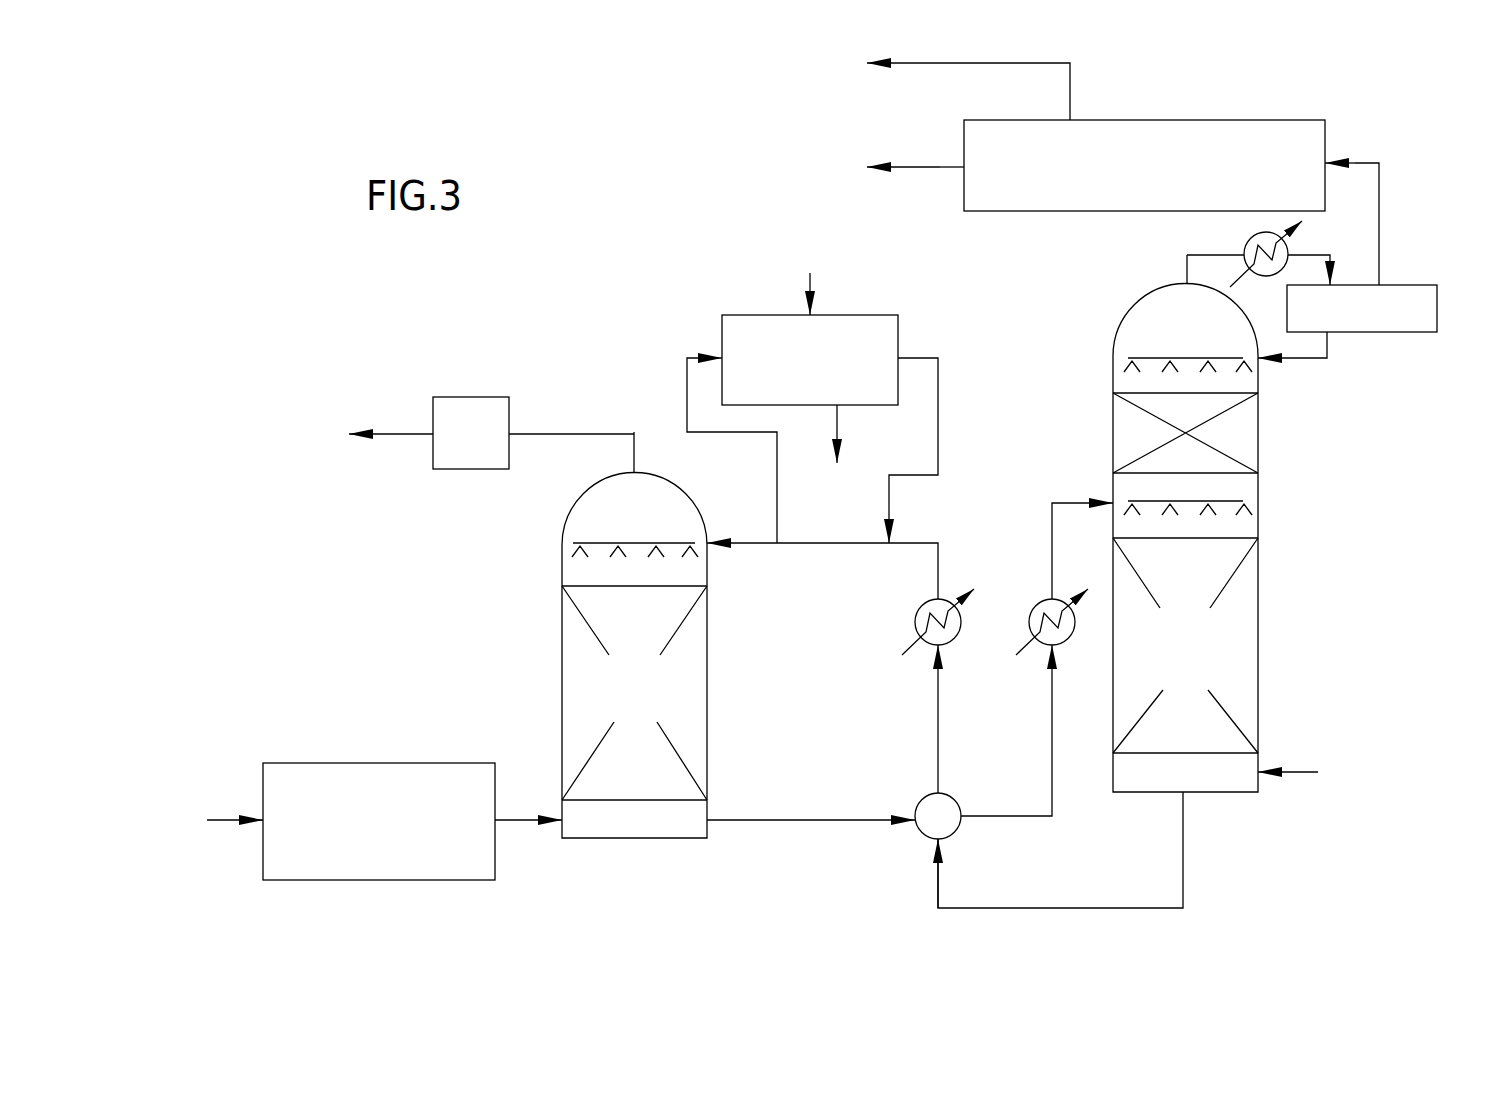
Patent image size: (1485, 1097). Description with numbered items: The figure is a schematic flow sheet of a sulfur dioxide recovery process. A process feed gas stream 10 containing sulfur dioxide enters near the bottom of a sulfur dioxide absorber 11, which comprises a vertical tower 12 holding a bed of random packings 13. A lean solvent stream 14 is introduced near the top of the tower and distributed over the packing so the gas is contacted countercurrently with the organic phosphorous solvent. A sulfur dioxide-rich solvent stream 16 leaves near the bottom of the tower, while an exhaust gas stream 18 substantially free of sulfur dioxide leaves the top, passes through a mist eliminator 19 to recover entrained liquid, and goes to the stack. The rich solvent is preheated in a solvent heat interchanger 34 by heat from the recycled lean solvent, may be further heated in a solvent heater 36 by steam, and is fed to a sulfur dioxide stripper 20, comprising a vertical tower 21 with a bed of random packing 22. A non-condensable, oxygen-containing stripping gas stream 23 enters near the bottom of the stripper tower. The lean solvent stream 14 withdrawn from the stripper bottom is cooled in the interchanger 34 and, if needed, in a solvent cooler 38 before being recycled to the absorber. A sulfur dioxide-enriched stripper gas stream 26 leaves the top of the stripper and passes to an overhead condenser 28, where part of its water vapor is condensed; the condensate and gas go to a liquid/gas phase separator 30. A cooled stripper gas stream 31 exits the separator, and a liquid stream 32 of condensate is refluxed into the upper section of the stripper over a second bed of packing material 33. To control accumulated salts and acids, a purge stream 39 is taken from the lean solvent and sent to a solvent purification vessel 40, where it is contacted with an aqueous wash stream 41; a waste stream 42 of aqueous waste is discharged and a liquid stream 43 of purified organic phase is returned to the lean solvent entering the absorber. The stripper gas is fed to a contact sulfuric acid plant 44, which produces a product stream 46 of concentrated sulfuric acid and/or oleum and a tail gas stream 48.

The process feed gas stream 10 is at (351, 805).
The sulfur dioxide absorber 11 is at (595, 635).
The vertical tower 12 is at (598, 635).
The bed of random packings 13 is at (656, 693).
The lean solvent stream 14 is at (972, 725).
The sulfur dioxide-rich solvent stream 16 is at (910, 698).
The exhaust gas stream 18 is at (460, 416).
The mist eliminator 19 is at (475, 405).
The sulfur dioxide stripper 20 is at (1242, 523).
The vertical tower 21 is at (1199, 523).
The bed of random packing 22 is at (1222, 645).
The stripping gas stream 23 is at (1310, 800).
The stripper gas stream 26 is at (1183, 268).
The overhead condenser 28 is at (1247, 251).
The liquid/gas phase separator 30 is at (1362, 311).
The cooled sulfur dioxide-enriched stripper gas stream 31 is at (1372, 224).
The liquid stream 32 is at (1310, 375).
The second bed of packing material 33 is at (1162, 433).
The solvent heat interchanger 34 is at (900, 840).
The solvent heater 36 is at (1045, 607).
The solvent cooler 38 is at (910, 622).
The purge stream 39 is at (695, 442).
The solvent purification vessel 40 is at (831, 342).
The aqueous wash stream 41 is at (830, 279).
The waste stream 42 is at (842, 467).
The liquid stream 43 is at (939, 450).
The contact sulfuric acid plant 44 is at (1144, 147).
The product stream 46 is at (870, 132).
The tail gas stream 48 is at (942, 73).